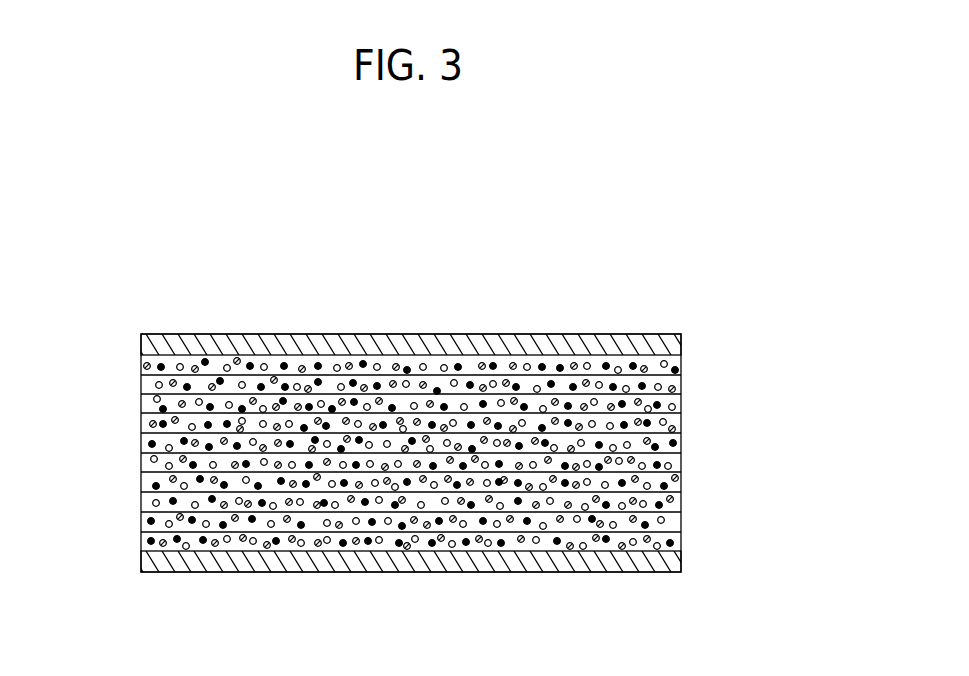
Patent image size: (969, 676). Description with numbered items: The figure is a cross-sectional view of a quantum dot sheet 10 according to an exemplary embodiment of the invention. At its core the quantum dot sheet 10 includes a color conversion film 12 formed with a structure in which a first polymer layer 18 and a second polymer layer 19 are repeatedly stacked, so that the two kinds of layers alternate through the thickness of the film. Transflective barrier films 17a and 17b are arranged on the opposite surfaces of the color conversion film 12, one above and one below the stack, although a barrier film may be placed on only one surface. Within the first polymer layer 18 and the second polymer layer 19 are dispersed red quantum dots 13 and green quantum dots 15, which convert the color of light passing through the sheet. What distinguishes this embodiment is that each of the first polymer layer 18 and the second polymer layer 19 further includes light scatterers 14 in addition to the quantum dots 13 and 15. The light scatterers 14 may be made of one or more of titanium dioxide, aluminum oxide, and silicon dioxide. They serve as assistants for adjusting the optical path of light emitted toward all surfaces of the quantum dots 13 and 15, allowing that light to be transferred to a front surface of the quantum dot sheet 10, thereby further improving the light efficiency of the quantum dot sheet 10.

The quantum dot sheet 10 is at (578, 281).
The color conversion film 12 is at (749, 380).
The red quantum dots 13 is at (665, 382).
The light scatterers 14 is at (672, 478).
The green quantum dots 15 is at (672, 443).
The transflective barrier film 17a is at (414, 346).
The transflective barrier film 17b is at (421, 562).
The first polymer layer 18 is at (141, 385).
The second polymer layer 19 is at (141, 367).